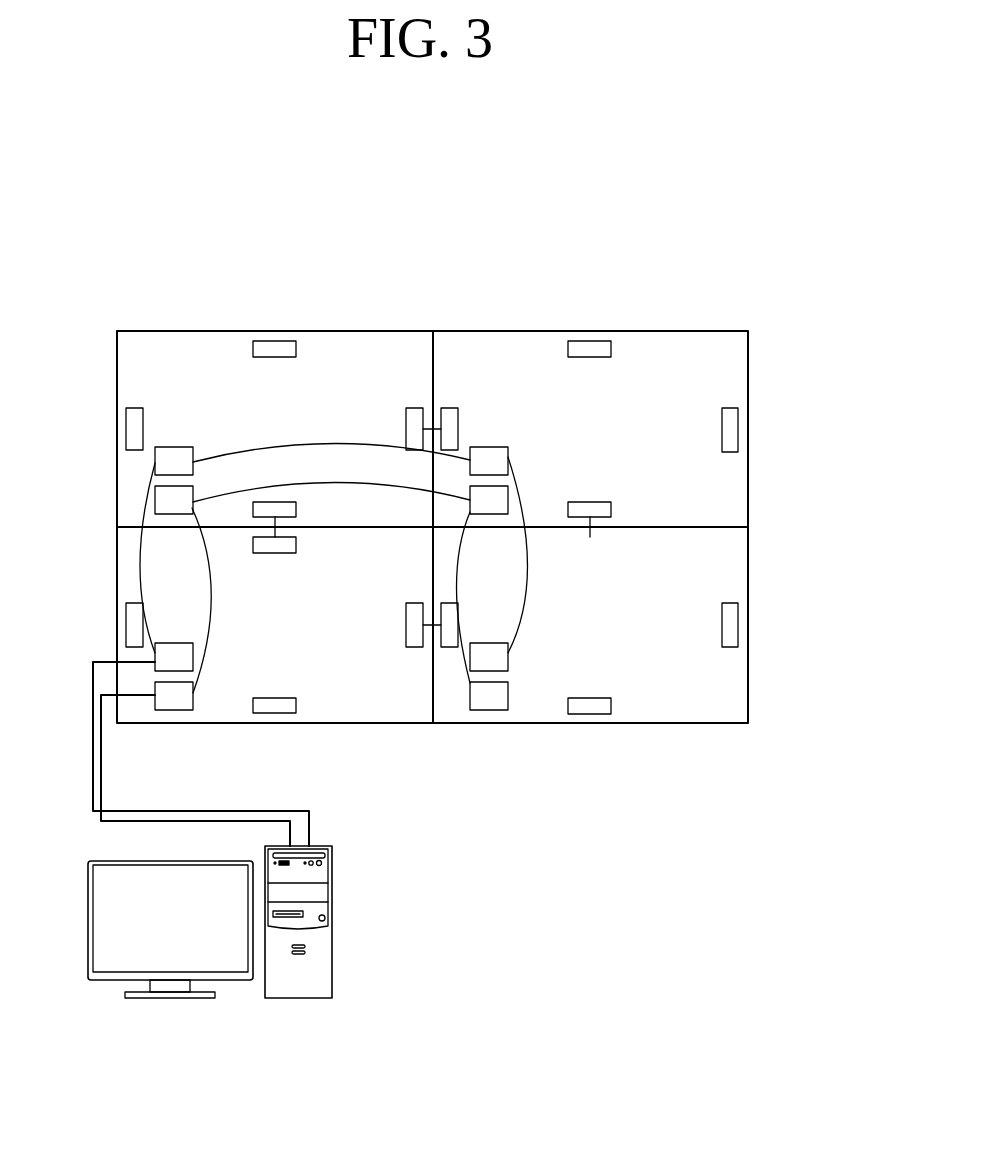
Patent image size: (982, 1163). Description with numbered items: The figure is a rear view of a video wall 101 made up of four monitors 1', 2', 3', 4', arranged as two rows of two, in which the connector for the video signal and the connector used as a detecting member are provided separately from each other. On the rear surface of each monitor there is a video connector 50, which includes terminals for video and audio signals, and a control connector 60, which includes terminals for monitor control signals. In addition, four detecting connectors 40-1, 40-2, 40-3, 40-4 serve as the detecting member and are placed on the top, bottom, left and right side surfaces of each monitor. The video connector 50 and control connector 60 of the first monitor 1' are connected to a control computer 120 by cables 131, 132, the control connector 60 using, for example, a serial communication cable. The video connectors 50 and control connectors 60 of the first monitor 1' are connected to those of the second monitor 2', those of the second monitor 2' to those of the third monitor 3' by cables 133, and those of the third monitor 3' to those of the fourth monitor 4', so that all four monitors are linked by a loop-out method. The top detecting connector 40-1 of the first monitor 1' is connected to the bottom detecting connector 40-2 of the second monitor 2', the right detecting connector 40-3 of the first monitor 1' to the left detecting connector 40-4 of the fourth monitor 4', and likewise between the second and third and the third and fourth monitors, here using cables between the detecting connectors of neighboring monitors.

The video wall 101 is at (357, 331).
The first monitor 1' is at (275, 652).
The second monitor 2' is at (275, 404).
The third monitor 3' is at (590, 403).
The fourth monitor 4' is at (590, 646).
The top detecting connector 40-1 is at (270, 347).
The bottom detecting connector 40-2 is at (288, 507).
The right detecting connector 40-3 is at (412, 413).
The left detecting connector 40-4 is at (452, 413).
The video connector 50 is at (162, 460).
The control connector 60 is at (162, 495).
The cables 133 is at (215, 492).
The cable 131 is at (90, 676).
The cable 132 is at (98, 712).
The control computer 120 is at (345, 858).